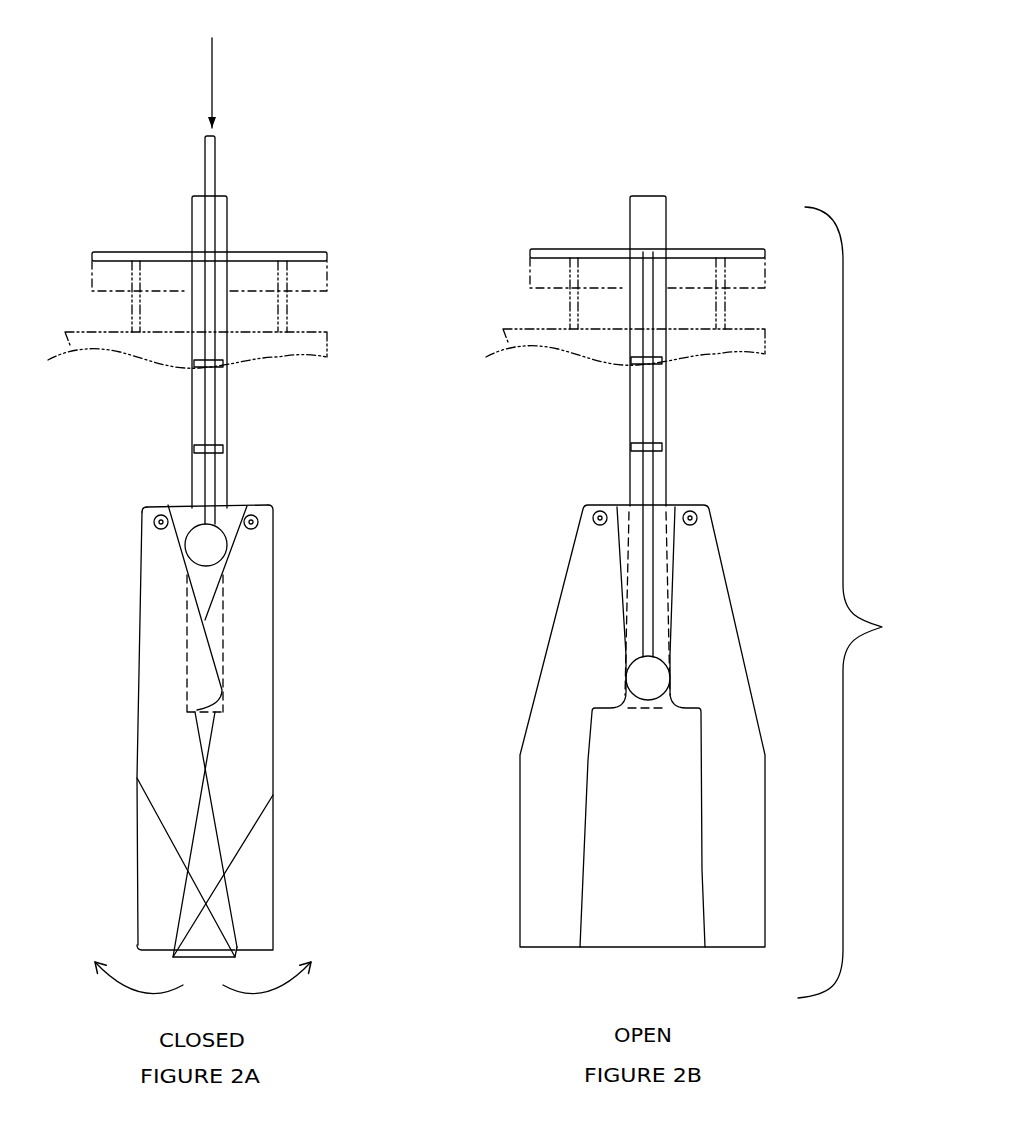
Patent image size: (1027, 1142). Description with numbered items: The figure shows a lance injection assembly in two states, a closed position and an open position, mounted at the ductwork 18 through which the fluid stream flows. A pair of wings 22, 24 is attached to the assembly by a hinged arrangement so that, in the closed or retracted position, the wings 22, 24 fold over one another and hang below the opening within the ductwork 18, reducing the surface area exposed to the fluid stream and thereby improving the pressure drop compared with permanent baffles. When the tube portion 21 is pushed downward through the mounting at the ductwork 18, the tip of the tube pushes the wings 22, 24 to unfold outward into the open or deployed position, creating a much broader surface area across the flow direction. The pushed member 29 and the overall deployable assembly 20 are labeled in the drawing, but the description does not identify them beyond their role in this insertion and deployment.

In FIG. 2B, the ductwork 18 is at (578, 267).
In FIG. 2B, the gripper assembly 20 is at (666, 546).
In FIG. 2A, the tube 21 is at (300, 297).
In FIG. 2B, the tube 21 is at (730, 300).
In FIG. 2A, the wing 22 is at (132, 731).
In FIG. 2A, the wing 24 is at (286, 731).
In FIG. 2A, the actuating rod 29 is at (301, 267).